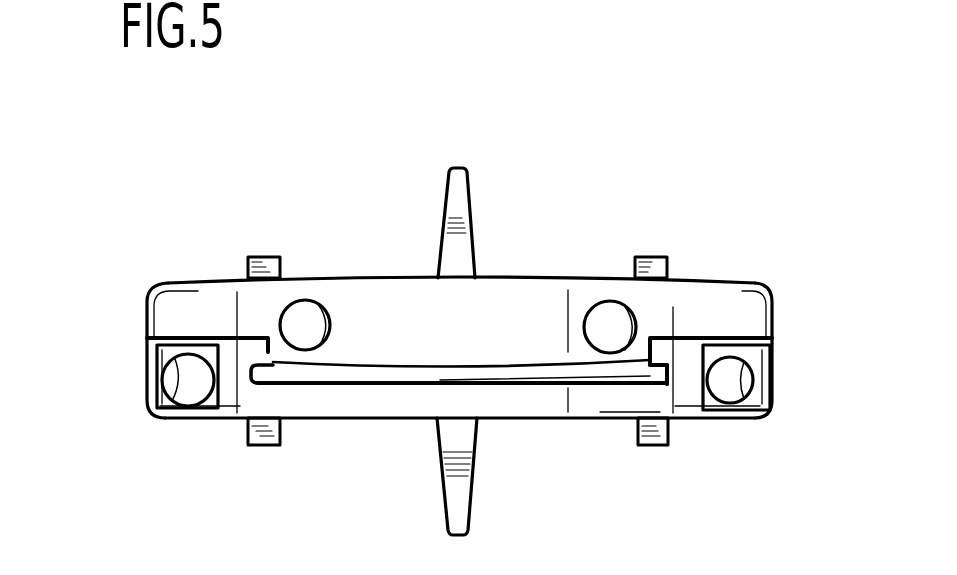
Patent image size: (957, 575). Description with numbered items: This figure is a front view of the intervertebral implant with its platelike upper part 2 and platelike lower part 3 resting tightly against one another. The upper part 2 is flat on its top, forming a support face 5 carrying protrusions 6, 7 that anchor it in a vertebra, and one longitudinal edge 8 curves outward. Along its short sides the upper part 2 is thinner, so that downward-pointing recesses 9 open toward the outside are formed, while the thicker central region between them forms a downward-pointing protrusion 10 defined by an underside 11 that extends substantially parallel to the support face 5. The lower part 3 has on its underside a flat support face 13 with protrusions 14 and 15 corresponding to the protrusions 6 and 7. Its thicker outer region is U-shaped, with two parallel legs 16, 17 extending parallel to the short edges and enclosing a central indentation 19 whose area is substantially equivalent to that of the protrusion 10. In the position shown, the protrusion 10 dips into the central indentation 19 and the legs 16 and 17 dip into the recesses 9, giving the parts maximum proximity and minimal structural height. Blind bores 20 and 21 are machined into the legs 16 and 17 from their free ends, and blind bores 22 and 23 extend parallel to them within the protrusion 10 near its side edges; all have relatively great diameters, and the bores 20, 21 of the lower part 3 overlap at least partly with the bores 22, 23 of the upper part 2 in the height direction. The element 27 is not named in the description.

The upper part 2 is at (633, 248).
The lower part 3 is at (568, 463).
The support face 5 is at (527, 278).
The protrusion 6 is at (450, 222).
The protrusion 7 is at (268, 270).
The longitudinal edge 8 is at (422, 378).
The recesses 9 is at (237, 352).
The protrusion 10 is at (370, 360).
The underside 11 is at (576, 373).
The support face 13 is at (328, 419).
The protrusion 14 is at (464, 507).
The protrusion 15 is at (258, 427).
The leg 16 is at (190, 350).
The leg 17 is at (722, 336).
The central indentation 19 is at (375, 381).
The blind bore 20 is at (168, 414).
The blind bore 21 is at (737, 402).
The blind bore 22 is at (320, 330).
The blind bore 23 is at (627, 312).
The retaining bracket 27 is at (258, 385).